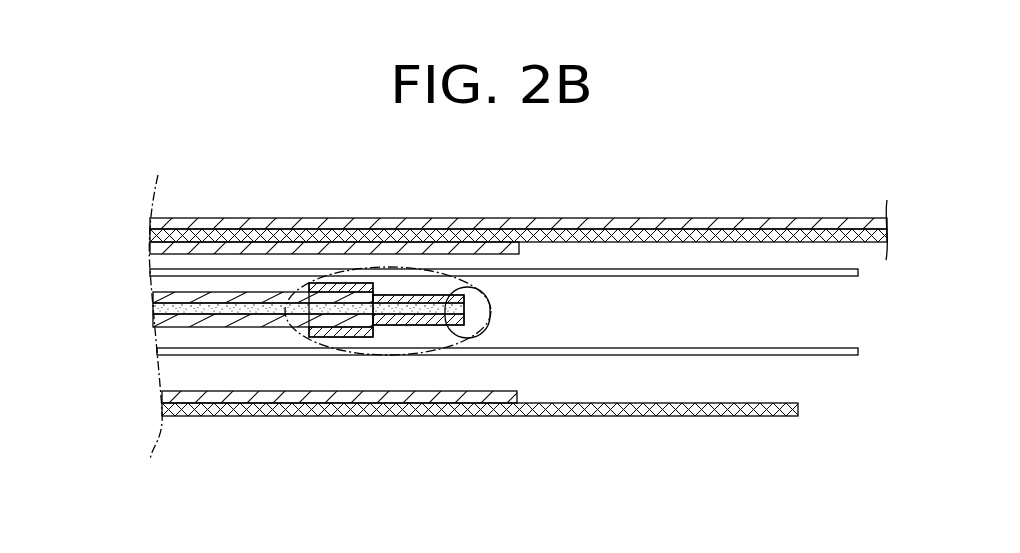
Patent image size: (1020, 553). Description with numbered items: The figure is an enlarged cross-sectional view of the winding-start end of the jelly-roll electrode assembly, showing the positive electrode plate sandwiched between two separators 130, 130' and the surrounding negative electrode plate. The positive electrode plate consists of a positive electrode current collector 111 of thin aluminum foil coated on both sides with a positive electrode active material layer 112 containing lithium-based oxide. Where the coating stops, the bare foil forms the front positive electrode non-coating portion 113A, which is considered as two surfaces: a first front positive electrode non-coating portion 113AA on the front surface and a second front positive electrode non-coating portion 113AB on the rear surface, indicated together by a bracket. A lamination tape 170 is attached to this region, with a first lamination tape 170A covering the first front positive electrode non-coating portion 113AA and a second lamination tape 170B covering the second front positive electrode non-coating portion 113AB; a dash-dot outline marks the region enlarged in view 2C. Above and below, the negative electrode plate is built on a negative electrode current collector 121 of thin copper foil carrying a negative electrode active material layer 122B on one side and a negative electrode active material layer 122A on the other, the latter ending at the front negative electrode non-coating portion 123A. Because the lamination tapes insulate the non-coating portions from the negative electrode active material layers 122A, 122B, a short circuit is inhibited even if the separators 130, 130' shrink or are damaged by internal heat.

The positive electrode current collector 111 is at (218, 300).
The positive electrode active material layer 112 is at (259, 247).
The negative electrode current collector 121 is at (349, 233).
The enlarged region (FIG. 2C) 2C is at (388, 264).
The negative electrode active material layer 122B is at (477, 248).
The separator 130 is at (504, 220).
The second front positive electrode non-coating portion 113AB is at (488, 290).
The first front positive electrode non-coating portion 113AA is at (488, 335).
The front positive electrode non-coating portion 113A is at (598, 287).
The second lamination tape 170B is at (322, 338).
The first lamination tape 170A is at (473, 377).
The lamination tape 170 is at (435, 397).
The separator 130' is at (507, 415).
The negative electrode active material layer 122A is at (518, 403).
The front negative electrode non-coating portion 123A is at (627, 416).